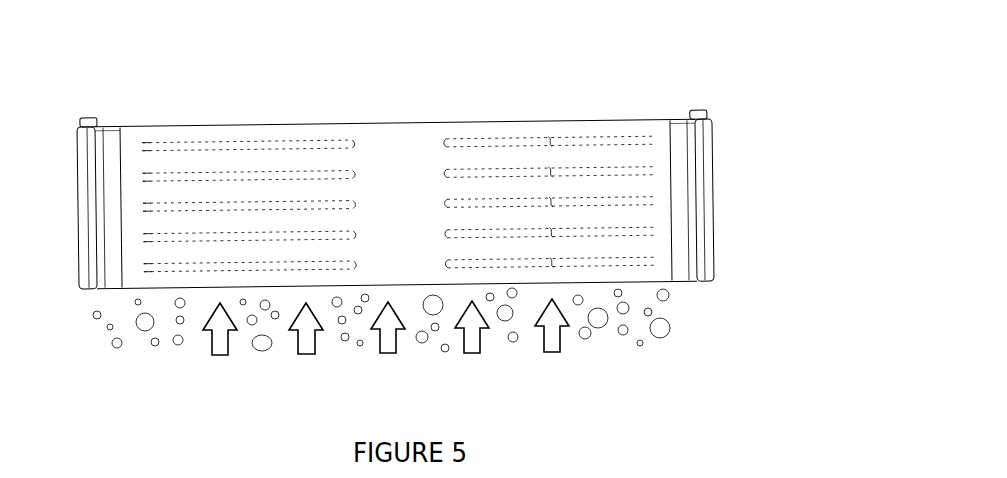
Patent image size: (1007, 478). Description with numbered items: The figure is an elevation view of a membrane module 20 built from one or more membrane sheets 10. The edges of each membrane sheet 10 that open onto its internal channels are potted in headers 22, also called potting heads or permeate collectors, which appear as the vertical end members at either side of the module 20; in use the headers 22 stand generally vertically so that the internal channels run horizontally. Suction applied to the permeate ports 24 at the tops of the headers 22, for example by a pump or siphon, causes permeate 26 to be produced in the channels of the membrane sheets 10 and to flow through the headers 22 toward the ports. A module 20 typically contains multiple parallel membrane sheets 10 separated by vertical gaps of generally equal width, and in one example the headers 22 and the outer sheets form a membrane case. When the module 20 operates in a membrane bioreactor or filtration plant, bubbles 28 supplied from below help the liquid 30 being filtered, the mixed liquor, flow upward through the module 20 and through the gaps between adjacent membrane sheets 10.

The membrane sheet 10 is at (623, 128).
The membrane module 20 is at (160, 384).
The header 22 is at (678, 125).
The permeate port 24 is at (90, 119).
The permeate 26 is at (477, 143).
The bubbles 28 is at (343, 341).
The liquid 30 is at (475, 354).